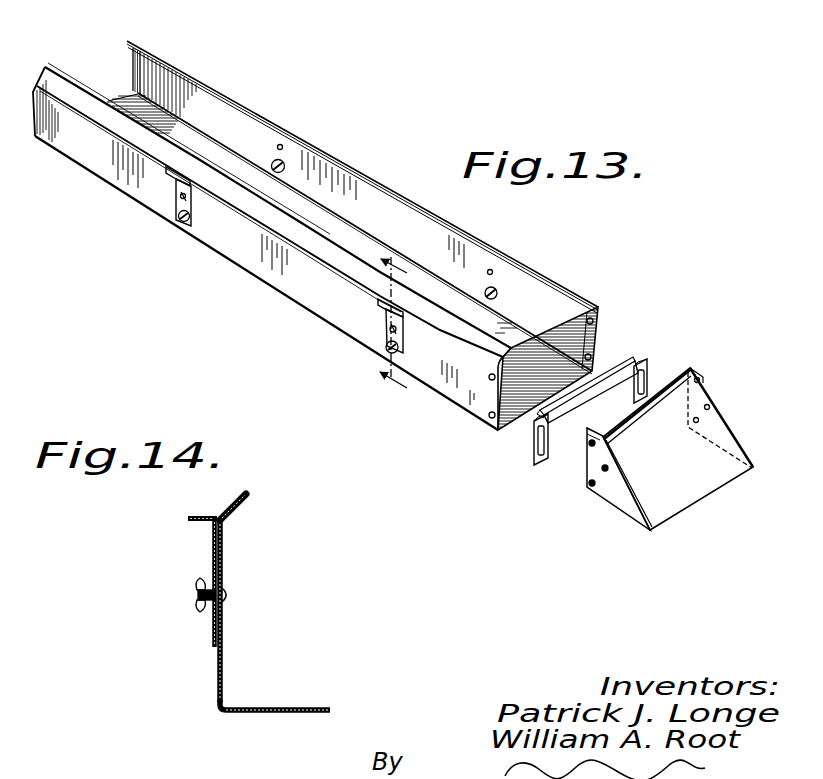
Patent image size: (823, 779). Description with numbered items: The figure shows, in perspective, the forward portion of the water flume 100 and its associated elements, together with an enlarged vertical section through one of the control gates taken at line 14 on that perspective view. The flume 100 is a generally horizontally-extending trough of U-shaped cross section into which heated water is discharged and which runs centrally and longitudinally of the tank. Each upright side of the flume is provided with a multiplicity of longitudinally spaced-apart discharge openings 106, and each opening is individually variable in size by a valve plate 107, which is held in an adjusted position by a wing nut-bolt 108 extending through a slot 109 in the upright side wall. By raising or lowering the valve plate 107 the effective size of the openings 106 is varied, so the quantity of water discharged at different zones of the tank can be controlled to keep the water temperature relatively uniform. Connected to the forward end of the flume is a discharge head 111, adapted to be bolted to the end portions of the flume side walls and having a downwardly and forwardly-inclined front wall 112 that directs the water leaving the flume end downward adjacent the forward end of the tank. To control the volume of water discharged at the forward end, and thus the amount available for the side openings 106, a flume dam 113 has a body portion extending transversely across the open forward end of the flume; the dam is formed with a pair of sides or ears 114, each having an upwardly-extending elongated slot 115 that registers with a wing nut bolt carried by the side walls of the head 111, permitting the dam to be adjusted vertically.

In FIG. 13, the water flume 100 is at (234, 126).
In FIG. 14, the water flume 100 is at (239, 716).
In FIG. 13, the discharge openings 106 is at (177, 224).
In FIG. 14, the discharge openings 106 is at (223, 680).
In FIG. 13, the valve plate 107 is at (190, 205).
In FIG. 14, the valve plate 107 is at (208, 523).
In FIG. 13, the wing nut-bolt 108 is at (389, 328).
In FIG. 14, the wing nut-bolt 108 is at (198, 602).
In FIG. 13, the slot 109 is at (382, 309).
In FIG. 13, the discharge head 111 is at (617, 492).
In FIG. 13, the front wall 112 is at (681, 492).
In FIG. 13, the flume dam 113 is at (616, 383).
In FIG. 13, the sides or ears 114 is at (642, 368).
In FIG. 13, the elongated slot 115 is at (645, 380).
In FIG. 13, the section line 14— 14 is at (408, 333).